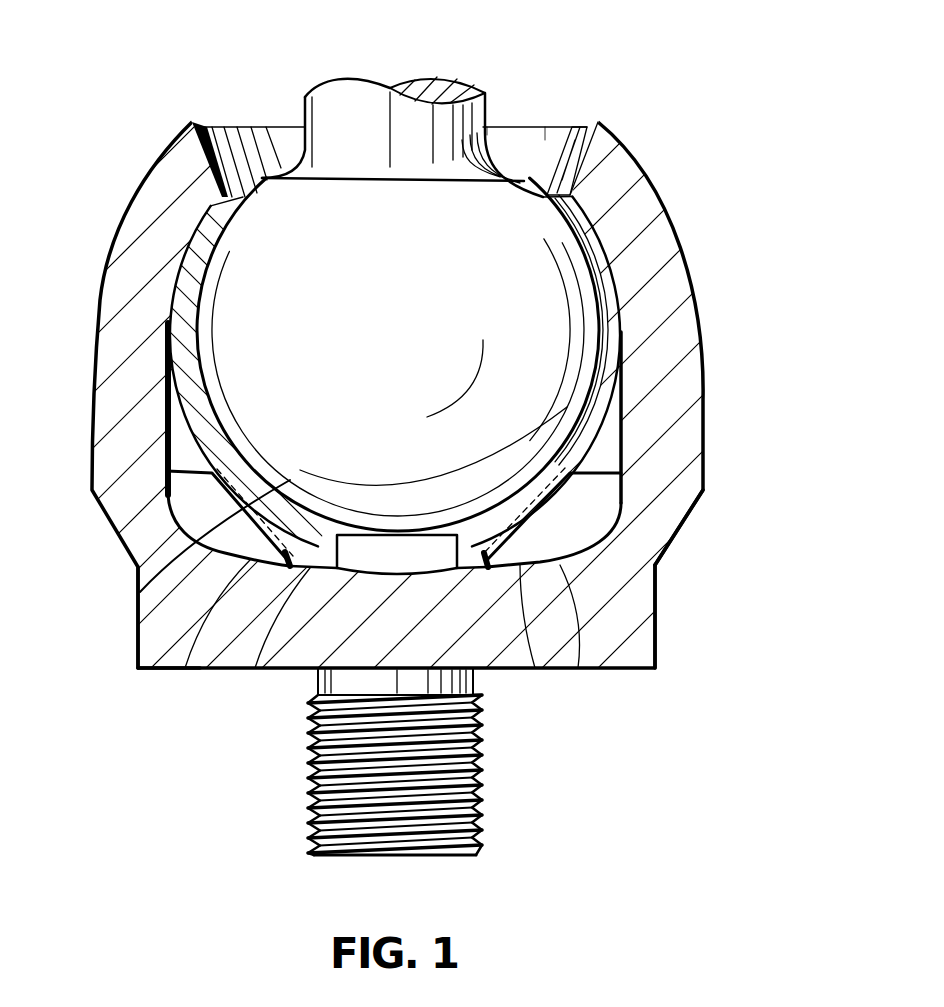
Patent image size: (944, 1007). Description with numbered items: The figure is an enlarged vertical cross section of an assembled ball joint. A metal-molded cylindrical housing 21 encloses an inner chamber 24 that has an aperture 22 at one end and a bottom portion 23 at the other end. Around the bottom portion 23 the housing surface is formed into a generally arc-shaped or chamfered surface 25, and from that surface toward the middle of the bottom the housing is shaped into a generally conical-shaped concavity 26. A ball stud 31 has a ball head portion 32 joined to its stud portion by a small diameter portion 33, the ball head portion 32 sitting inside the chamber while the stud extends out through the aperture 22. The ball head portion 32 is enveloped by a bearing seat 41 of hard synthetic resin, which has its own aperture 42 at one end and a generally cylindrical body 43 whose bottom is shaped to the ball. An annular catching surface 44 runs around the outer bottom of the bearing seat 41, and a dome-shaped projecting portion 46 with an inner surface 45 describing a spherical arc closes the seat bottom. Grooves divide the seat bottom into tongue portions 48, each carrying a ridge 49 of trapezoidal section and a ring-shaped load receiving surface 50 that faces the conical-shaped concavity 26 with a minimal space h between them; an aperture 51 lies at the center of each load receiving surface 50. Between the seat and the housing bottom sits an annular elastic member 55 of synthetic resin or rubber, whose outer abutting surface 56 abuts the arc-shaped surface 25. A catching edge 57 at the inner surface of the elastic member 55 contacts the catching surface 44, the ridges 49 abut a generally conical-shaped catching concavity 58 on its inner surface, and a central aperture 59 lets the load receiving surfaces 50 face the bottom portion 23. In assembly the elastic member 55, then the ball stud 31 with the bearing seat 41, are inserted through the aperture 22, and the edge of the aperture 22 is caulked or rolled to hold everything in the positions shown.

The housing 21 is at (633, 203).
The aperture 22 is at (520, 137).
The bottom portion 23 is at (593, 543).
The inner chamber 24 is at (625, 373).
The arc-shaped surface 25 is at (657, 558).
The conical-shaped concavity 26 is at (320, 568).
The ball stud 31 is at (402, 110).
The ball head portion 32 is at (565, 398).
The small diameter portion 33 is at (312, 157).
The bearing seat 41 is at (610, 283).
The aperture 42 is at (570, 132).
The cylindrical body 43 is at (172, 323).
The catching surface 44 is at (625, 457).
The inner surface 45 is at (168, 447).
The projecting portion 46 is at (300, 475).
The tongue portion 48 is at (655, 615).
The ridge 49 is at (222, 552).
The load receiving surface 50 is at (557, 557).
The aperture 51 is at (340, 573).
The elastic member 55 is at (590, 502).
The abutting surface 56 is at (613, 527).
The catching edge 57 is at (167, 495).
The catching concavity 58 is at (540, 578).
The aperture 59 is at (260, 560).
The minimal space h is at (513, 535).